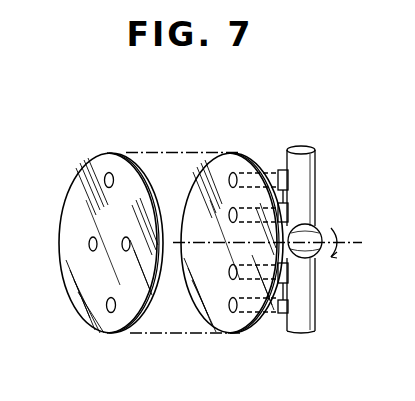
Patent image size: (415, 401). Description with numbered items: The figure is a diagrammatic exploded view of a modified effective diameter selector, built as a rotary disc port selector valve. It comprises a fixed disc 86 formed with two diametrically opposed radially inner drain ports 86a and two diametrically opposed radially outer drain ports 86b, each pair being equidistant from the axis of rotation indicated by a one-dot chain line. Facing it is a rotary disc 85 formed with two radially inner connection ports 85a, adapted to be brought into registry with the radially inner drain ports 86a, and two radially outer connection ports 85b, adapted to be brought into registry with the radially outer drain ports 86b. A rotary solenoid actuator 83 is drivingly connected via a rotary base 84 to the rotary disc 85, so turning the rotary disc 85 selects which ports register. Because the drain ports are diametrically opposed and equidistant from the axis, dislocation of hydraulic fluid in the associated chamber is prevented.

The rotary solenoid actuator 83 is at (312, 230).
The rotary base 84 is at (300, 188).
The rotary disc 85 is at (238, 158).
The radially inner connection ports 85a is at (229, 216).
The radially outer connection ports 85b is at (229, 180).
The fixed disc 86 is at (111, 166).
The radially inner drain ports 86a is at (122, 250).
The radially outer drain ports 86b is at (105, 177).